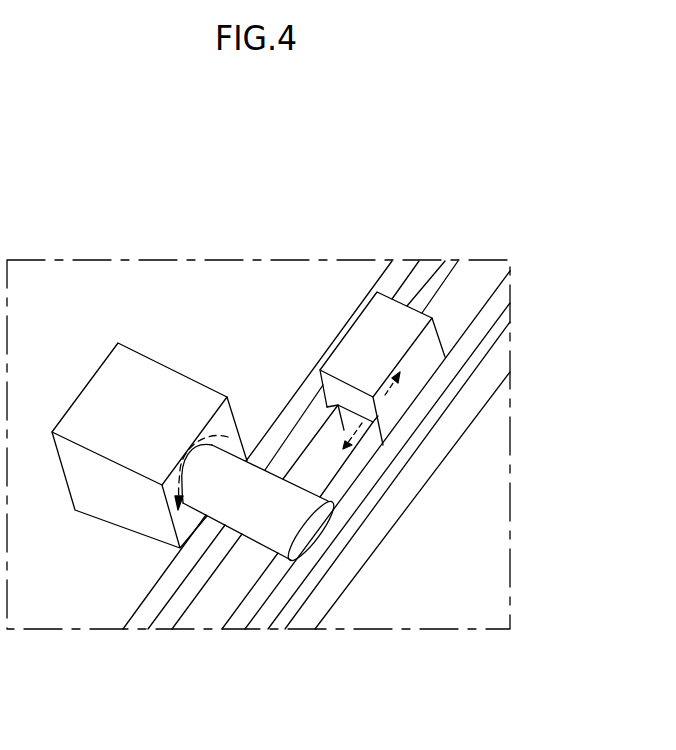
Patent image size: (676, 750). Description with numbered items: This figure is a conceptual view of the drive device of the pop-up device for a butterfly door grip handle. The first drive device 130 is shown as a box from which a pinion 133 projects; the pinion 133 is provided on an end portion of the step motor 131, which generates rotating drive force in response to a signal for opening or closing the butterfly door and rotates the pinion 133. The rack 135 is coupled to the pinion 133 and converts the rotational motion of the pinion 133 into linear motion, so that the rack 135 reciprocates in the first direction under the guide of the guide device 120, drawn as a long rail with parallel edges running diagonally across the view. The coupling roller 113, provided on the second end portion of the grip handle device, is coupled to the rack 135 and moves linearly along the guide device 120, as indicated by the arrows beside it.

The coupling roller 113 is at (396, 330).
The guide device 120 is at (408, 484).
The first drive device 130 is at (144, 356).
The step motor 131 is at (173, 390).
The pinion 133 is at (256, 527).
The rack 135 is at (318, 455).